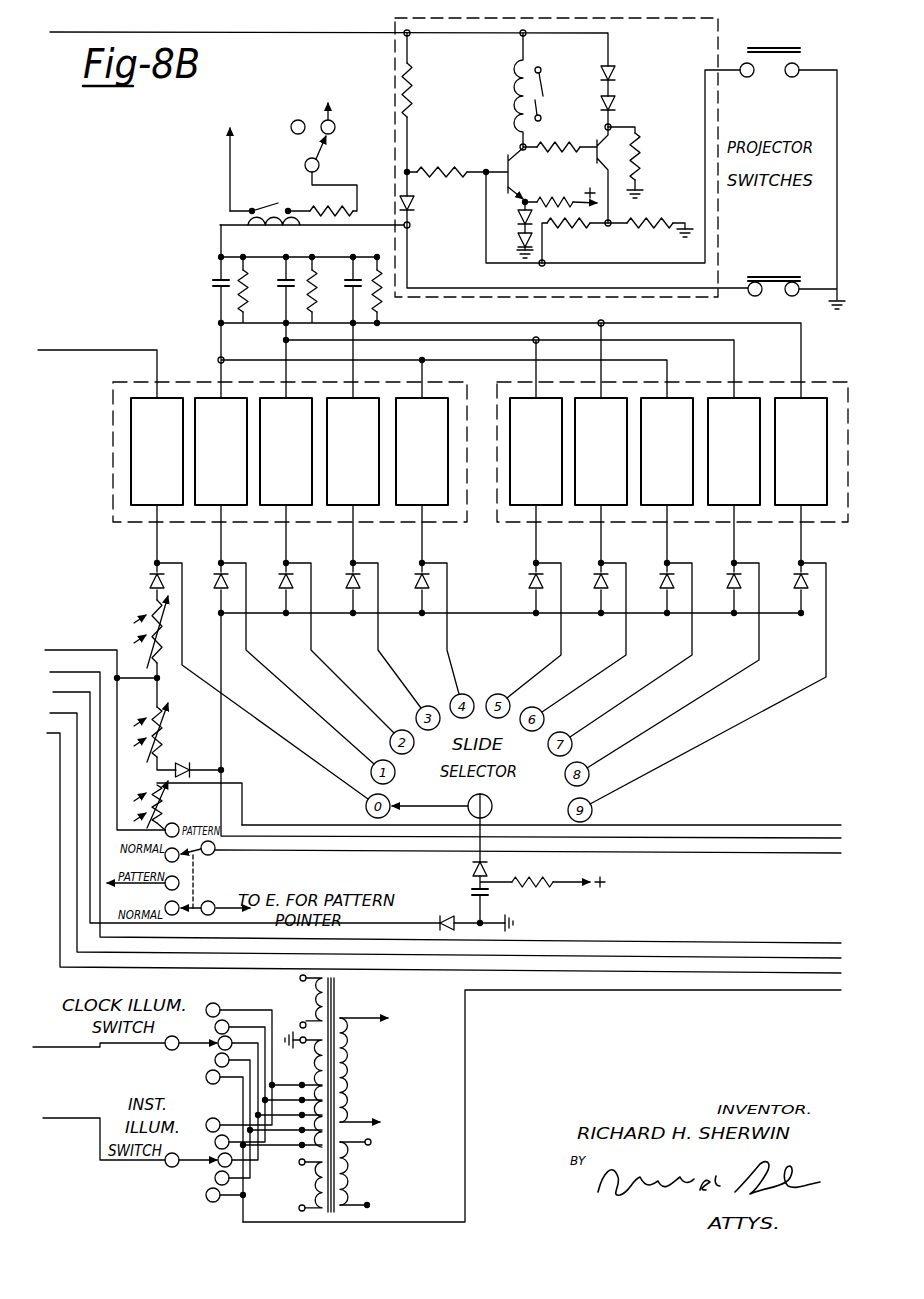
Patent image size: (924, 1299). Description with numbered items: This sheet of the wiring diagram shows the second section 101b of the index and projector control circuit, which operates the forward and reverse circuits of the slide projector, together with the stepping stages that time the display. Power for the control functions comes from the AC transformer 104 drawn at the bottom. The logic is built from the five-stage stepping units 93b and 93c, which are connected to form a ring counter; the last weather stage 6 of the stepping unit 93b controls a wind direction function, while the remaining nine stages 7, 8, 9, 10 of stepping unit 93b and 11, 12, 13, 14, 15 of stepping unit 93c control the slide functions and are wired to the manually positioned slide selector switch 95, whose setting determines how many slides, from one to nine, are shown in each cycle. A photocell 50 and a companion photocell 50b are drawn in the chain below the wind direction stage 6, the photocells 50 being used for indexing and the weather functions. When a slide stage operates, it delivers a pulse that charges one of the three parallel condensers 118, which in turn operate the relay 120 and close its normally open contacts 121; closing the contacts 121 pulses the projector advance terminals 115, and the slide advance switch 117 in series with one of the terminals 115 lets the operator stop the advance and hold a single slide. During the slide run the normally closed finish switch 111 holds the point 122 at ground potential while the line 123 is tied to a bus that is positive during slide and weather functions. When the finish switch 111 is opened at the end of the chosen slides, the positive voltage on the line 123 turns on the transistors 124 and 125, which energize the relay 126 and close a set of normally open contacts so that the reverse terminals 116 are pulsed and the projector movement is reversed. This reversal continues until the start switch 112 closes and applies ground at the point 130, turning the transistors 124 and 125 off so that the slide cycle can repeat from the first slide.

The second section of the index and projector control circuit 101b is at (404, 25).
The line 123 is at (455, 36).
The point 122 is at (409, 169).
The point 130 is at (483, 177).
The transistor 124 is at (510, 173).
The relay 126 is at (522, 87).
The transistor 125 is at (601, 136).
The terminals 116 is at (538, 67).
The start switch 112 is at (760, 43).
The finish switch 111 is at (771, 293).
The terminals 115 is at (232, 127).
The slide advance switch 117 is at (305, 163).
The contacts 121 is at (279, 191).
The relay 120 is at (267, 221).
The condensers 118 is at (215, 292).
The stepping unit 93b is at (271, 452).
The stepping unit 93c is at (675, 437).
The wind direction relay 6 is at (157, 451).
The slide relay 1 7 is at (221, 451).
The slide relay 2 8 is at (286, 451).
The slide relay 3 9 is at (353, 451).
The slide relay 4 10 is at (422, 451).
The slide relay 5 11 is at (536, 451).
The slide relay 6 12 is at (601, 451).
The projector 13 is at (667, 451).
The slide relay 8 14 is at (734, 451).
The slide relay 9 15 is at (801, 451).
The photocells 50 is at (148, 609).
The photoresistor 50b is at (163, 744).
The slide selector switch 95 is at (498, 801).
The AC transformer 104 is at (344, 1011).